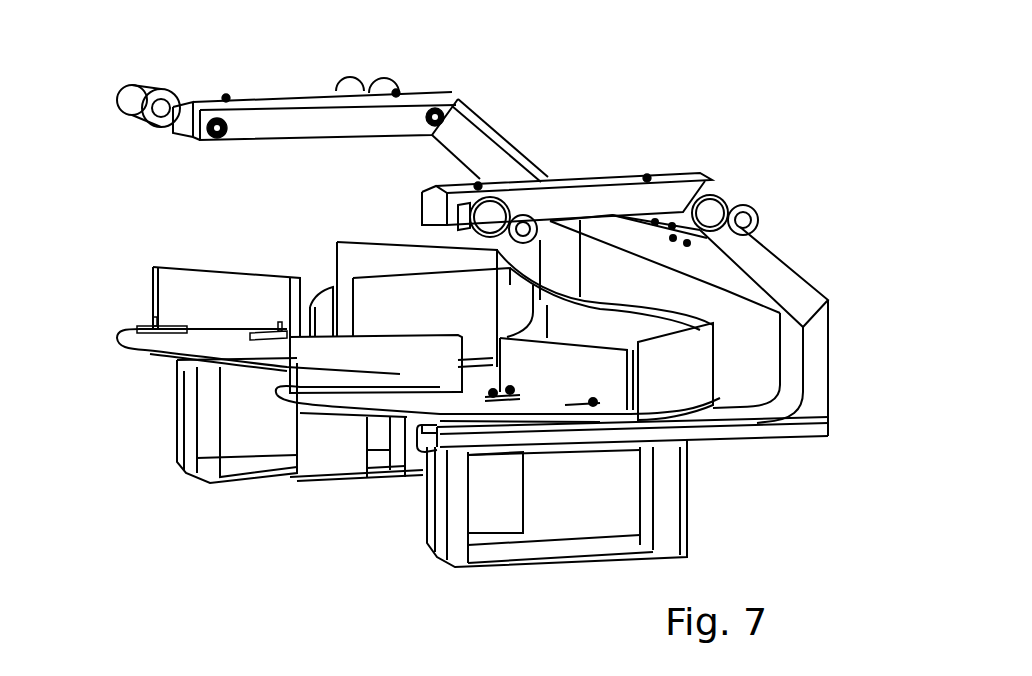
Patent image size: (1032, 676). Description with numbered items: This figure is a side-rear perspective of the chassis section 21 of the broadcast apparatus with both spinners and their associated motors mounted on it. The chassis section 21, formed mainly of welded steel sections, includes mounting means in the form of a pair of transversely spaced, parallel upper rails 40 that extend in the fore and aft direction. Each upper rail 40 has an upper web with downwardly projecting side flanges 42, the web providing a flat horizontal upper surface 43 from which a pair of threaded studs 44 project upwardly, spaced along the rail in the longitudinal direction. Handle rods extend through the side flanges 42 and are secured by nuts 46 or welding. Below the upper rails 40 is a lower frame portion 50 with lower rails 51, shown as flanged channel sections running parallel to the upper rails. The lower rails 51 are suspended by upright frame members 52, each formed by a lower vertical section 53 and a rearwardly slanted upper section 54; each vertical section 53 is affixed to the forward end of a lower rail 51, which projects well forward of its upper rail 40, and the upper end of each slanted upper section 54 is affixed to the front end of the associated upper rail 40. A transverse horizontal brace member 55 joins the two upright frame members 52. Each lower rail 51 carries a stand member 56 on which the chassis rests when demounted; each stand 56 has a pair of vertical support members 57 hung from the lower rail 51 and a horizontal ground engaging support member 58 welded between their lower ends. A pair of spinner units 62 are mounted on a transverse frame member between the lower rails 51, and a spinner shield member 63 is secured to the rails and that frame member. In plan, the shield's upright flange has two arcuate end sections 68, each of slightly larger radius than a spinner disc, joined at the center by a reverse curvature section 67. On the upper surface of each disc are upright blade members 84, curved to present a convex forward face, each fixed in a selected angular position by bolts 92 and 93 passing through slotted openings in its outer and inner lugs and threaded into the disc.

The chassis section 21 is at (806, 180).
The upper rail 40 is at (272, 85).
The side flange 42 is at (286, 120).
The upper surface 43 is at (313, 98).
The threaded stud 44 is at (226, 98).
The nut 46 is at (437, 115).
The lower frame portion 50 is at (345, 548).
The lower rail 51 is at (753, 428).
The upright frame member 52 is at (835, 287).
The vertical section 53 is at (817, 356).
The slanted upper section 54 is at (772, 268).
The horizontal brace member 55 is at (720, 268).
The stand member 56 is at (182, 478).
The vertical support member 57 is at (177, 432).
The ground engaging support member 58 is at (255, 475).
The spinner unit 62 is at (125, 357).
The spinner shield member 63 is at (397, 238).
The reverse curvature section 67 is at (540, 288).
The arcuate end section 68 is at (717, 323).
The blade member 84 is at (263, 287).
The bolt 92 is at (155, 322).
The bolt 93 is at (278, 326).